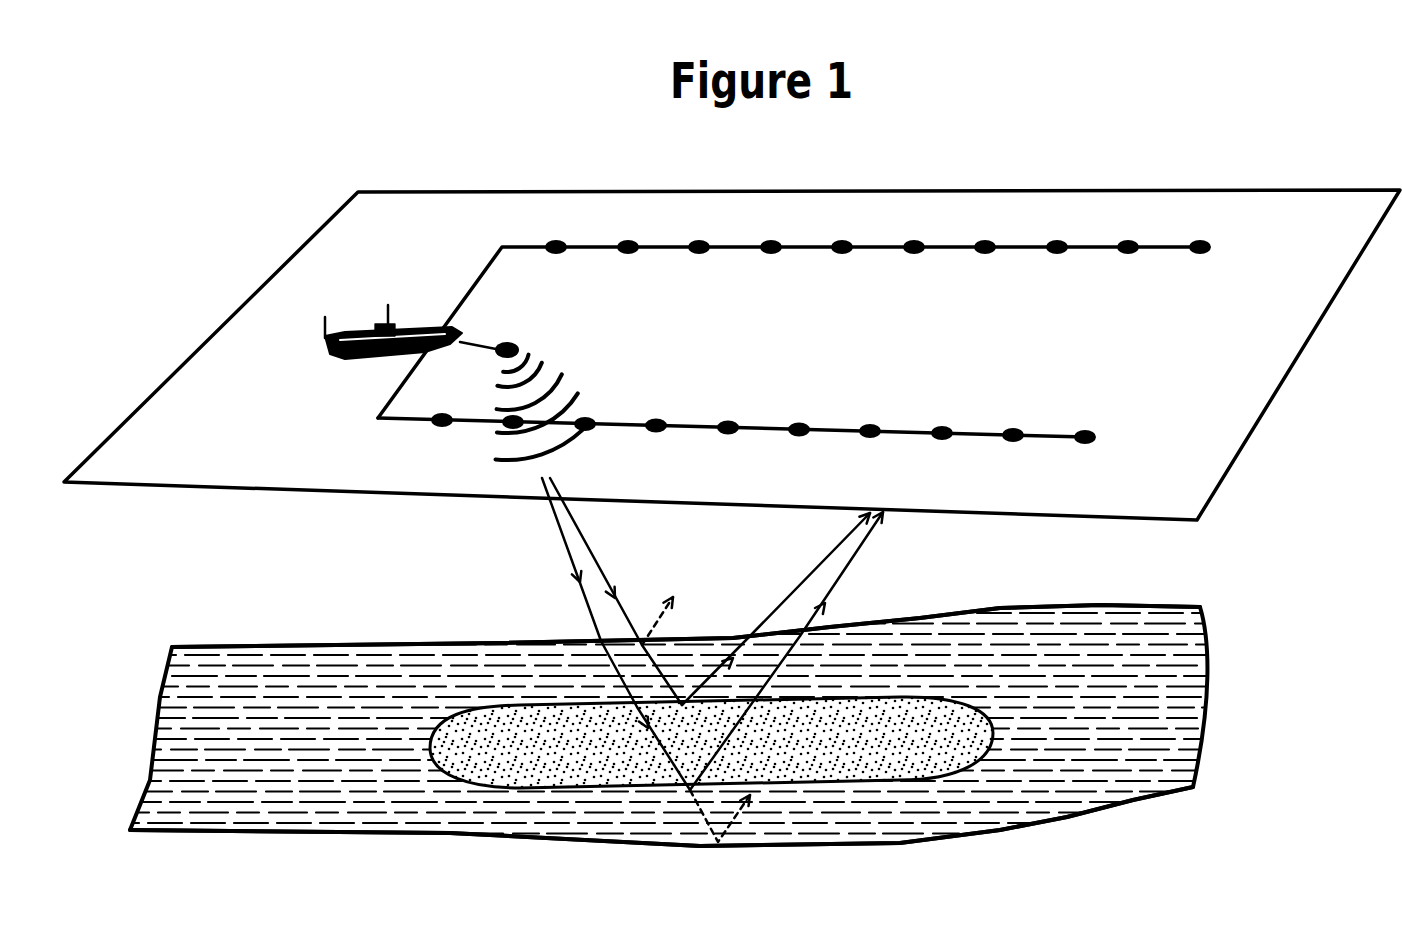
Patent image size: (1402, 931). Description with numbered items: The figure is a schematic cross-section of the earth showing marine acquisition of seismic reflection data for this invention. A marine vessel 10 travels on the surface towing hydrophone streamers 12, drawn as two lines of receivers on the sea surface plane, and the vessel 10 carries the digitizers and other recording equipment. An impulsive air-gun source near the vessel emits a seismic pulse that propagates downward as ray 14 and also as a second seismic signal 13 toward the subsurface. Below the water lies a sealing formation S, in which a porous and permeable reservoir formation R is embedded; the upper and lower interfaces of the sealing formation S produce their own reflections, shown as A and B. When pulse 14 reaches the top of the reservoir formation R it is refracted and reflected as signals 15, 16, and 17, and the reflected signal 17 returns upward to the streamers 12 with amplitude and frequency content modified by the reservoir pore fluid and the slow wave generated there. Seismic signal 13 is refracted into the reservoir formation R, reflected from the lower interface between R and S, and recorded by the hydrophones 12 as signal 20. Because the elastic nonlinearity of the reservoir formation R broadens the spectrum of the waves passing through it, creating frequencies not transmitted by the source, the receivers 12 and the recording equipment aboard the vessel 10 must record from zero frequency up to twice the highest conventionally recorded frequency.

The marine vessel 10 is at (408, 318).
The hydrophone streamers 12 is at (820, 250).
The seismic signal 13 is at (606, 634).
The seismic pulse 14 is at (616, 591).
The refracted and reflected seismic signal 15 is at (671, 643).
The refracted and reflected seismic signal 16 is at (724, 753).
The reflected seismic signal 17 is at (776, 609).
The recorded reflected signal 20 is at (792, 651).
The reservoir formation R is at (711, 742).
The sealing formation S is at (670, 725).
The seismic reflection from lower interface of sealing formation A is at (661, 816).
The seismic reflection from upper interface of sealing formation B is at (686, 606).